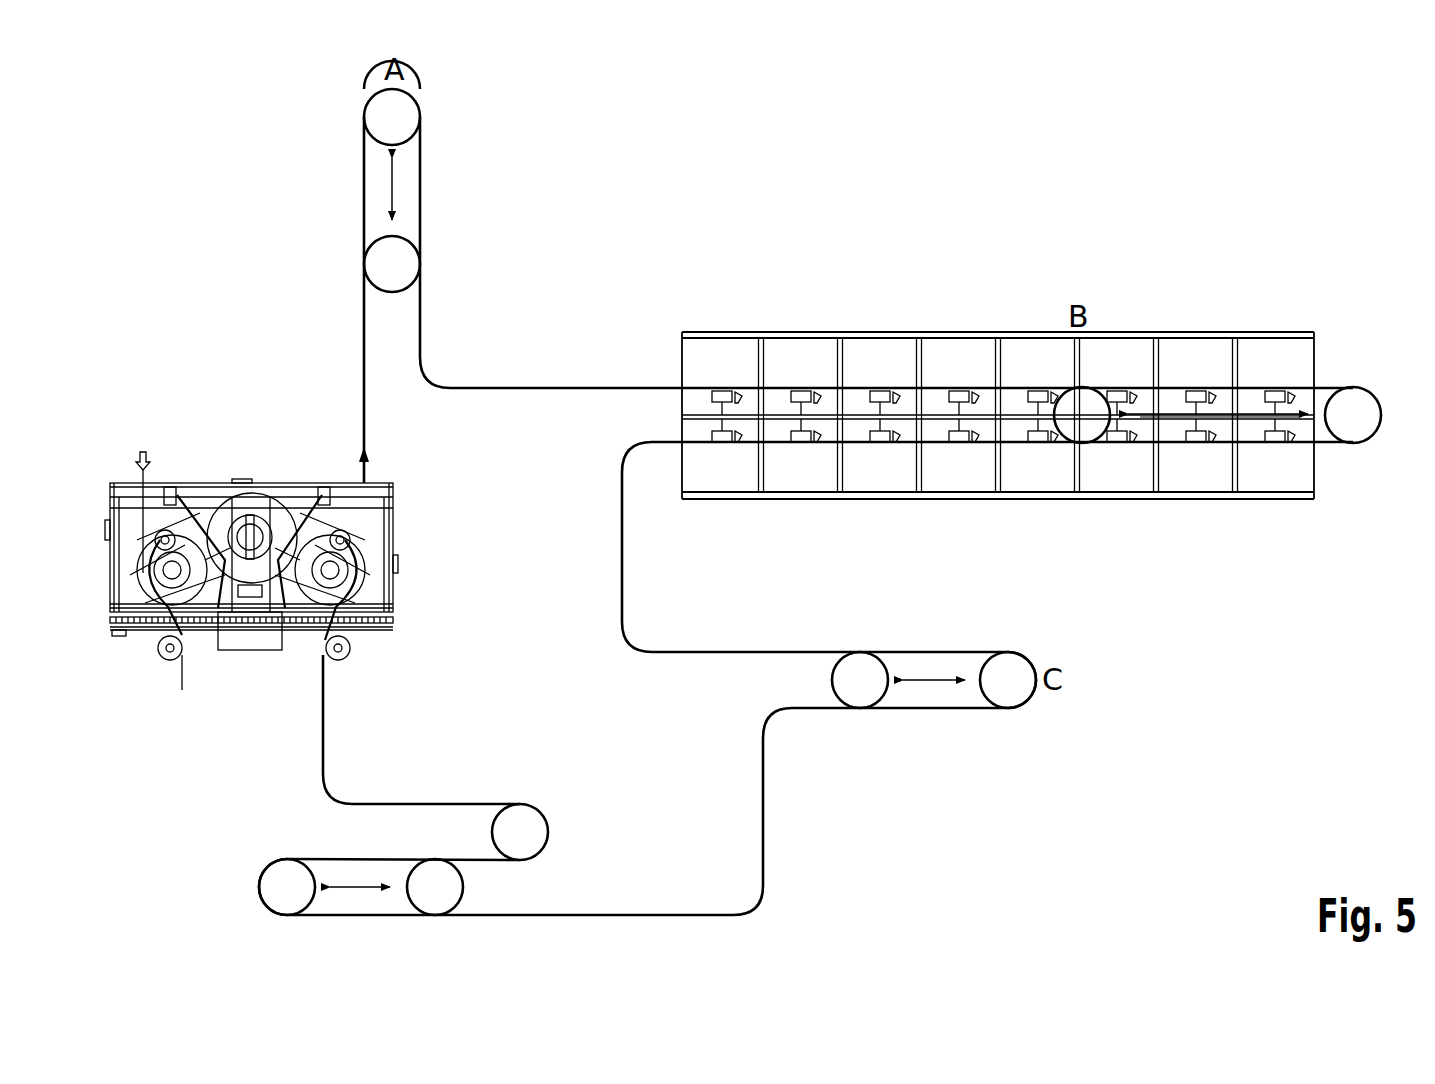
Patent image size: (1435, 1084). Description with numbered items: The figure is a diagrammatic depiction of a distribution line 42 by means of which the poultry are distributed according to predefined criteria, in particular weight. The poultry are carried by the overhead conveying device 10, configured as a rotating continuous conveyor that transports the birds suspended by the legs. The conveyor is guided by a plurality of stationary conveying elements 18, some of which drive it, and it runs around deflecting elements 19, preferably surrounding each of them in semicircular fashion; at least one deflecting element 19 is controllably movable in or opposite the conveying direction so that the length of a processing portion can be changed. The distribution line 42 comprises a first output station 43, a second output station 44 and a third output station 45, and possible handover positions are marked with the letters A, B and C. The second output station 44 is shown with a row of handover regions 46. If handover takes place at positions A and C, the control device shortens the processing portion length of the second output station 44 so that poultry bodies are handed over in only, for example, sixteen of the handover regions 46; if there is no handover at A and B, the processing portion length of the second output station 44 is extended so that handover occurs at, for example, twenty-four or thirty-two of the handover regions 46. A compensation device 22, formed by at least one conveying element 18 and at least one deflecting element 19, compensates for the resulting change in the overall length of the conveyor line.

The overhead conveying device 10 is at (560, 387).
The conveying element 18 is at (376, 127).
The deflecting element 19 is at (378, 257).
The compensation device 22 is at (257, 878).
The distribution line 42 is at (1190, 176).
The first output station 43 is at (348, 192).
The second output station 44 is at (1258, 296).
The third output station 45 is at (932, 720).
The handover region 46 is at (720, 362).